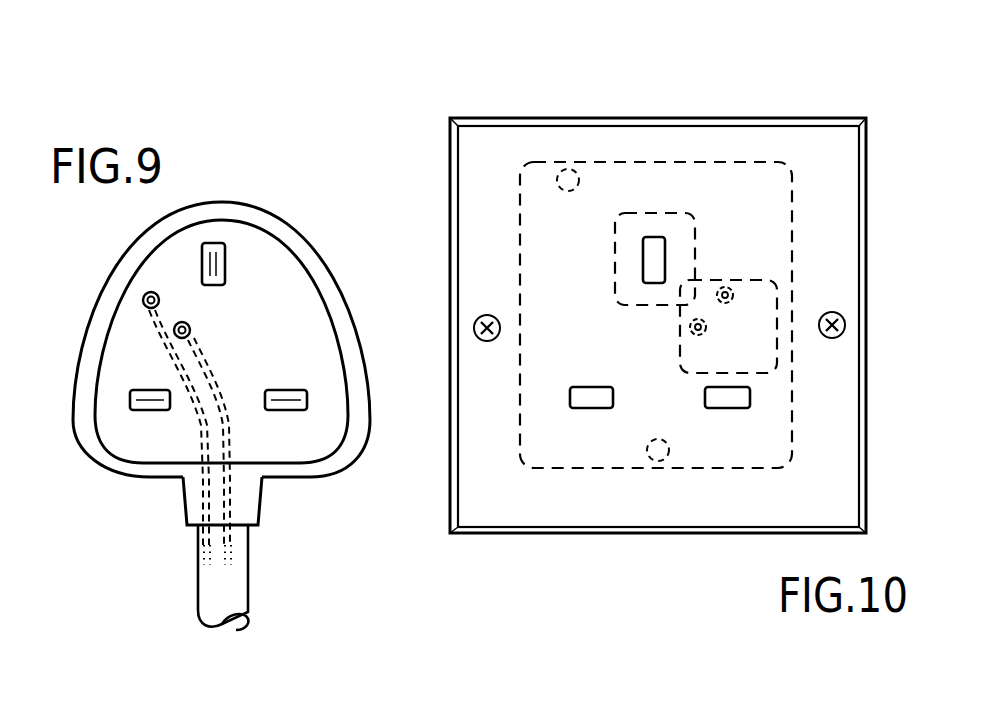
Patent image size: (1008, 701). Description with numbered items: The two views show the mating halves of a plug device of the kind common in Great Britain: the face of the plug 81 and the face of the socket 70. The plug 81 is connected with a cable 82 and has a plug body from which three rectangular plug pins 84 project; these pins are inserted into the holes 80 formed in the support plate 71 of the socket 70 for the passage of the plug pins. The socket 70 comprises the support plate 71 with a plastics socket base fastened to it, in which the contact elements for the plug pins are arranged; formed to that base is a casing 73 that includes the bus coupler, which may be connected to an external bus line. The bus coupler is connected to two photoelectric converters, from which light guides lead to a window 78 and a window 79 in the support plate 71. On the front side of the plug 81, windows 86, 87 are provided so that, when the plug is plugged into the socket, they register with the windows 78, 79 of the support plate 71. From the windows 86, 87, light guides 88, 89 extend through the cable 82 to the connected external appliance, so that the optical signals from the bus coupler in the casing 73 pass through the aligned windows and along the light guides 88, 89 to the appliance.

In FIG. 10, the socket 70 is at (684, 102).
In FIG. 10, the support plate 71 is at (575, 136).
In FIG. 10, the casing 73 is at (782, 300).
In FIG. 10, the window 78 is at (729, 290).
In FIG. 10, the window 79 is at (707, 332).
In FIG. 10, the holes 80 is at (659, 258).
In FIG. 9, the plug 81 is at (342, 274).
In FIG. 9, the cable 82 is at (243, 595).
In FIG. 9, the plug pins 84 is at (225, 258).
In FIG. 9, the window 86 is at (148, 292).
In FIG. 9, the window 87 is at (191, 330).
In FIG. 9, the light guide 88 is at (197, 412).
In FIG. 9, the light guide 89 is at (227, 428).